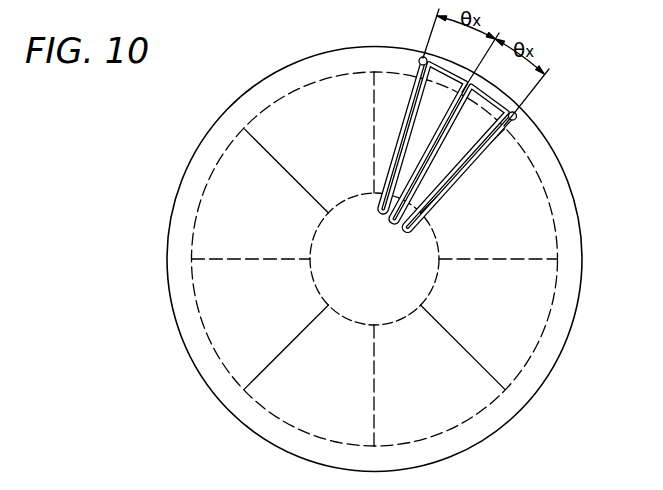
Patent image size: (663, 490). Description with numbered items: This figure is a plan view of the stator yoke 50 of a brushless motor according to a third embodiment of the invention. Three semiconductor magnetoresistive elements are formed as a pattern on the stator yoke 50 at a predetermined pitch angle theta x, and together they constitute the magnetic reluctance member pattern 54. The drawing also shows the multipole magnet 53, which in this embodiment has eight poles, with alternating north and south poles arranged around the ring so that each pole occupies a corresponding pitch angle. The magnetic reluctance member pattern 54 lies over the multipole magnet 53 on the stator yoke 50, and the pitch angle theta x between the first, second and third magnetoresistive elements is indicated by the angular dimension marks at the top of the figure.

The stator yoke 50 is at (563, 170).
The multipole magnet 53 is at (530, 375).
The magnetic reluctance member pattern 54 is at (500, 100).